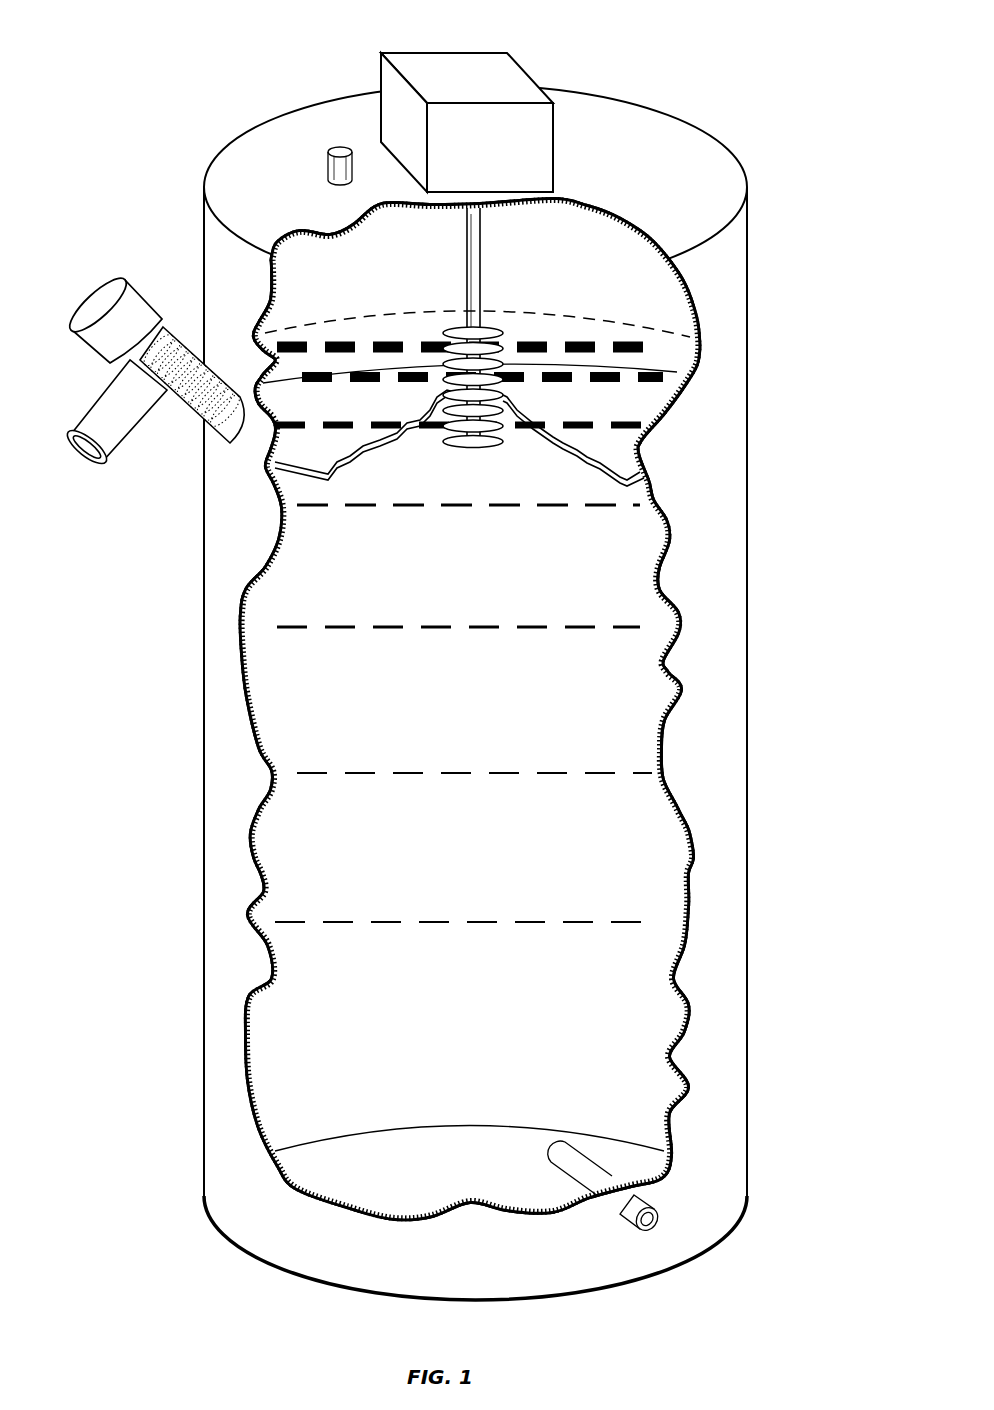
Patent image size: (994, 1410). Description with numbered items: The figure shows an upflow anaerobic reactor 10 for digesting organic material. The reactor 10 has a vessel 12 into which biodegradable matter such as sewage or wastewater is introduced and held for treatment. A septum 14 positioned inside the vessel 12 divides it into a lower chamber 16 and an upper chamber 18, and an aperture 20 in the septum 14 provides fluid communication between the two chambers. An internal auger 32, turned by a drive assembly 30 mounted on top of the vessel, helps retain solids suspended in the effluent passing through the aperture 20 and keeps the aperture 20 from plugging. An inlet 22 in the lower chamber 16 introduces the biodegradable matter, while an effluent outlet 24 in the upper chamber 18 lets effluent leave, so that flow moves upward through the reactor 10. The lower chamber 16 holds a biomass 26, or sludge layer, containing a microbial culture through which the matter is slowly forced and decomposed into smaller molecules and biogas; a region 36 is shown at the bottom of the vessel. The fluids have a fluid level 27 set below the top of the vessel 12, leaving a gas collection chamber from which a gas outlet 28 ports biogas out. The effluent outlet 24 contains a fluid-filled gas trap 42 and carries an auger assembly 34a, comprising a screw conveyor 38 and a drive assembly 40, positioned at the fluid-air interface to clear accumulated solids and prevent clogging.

The upflow anaerobic reactor 10 is at (736, 85).
The vessel 12 is at (475, 187).
The septum 14 is at (640, 407).
The lower chamber 16 is at (312, 829).
The upper chamber 18 is at (590, 412).
The aperture 20 is at (440, 385).
The inlet 22 is at (656, 1228).
The effluent outlet 24 is at (144, 363).
The biomass 26 is at (463, 713).
The fluid level 27 is at (610, 320).
The gas outlet 28 is at (330, 165).
The drive assembly 30 is at (481, 52).
The internal auger 32 is at (440, 282).
The auger assembly 34a is at (175, 325).
The bottom compartment 36 is at (469, 1156).
The screw conveyor 38 is at (195, 417).
The drive assembly 40 is at (112, 317).
The fluid-filled gas trap 42 is at (193, 403).